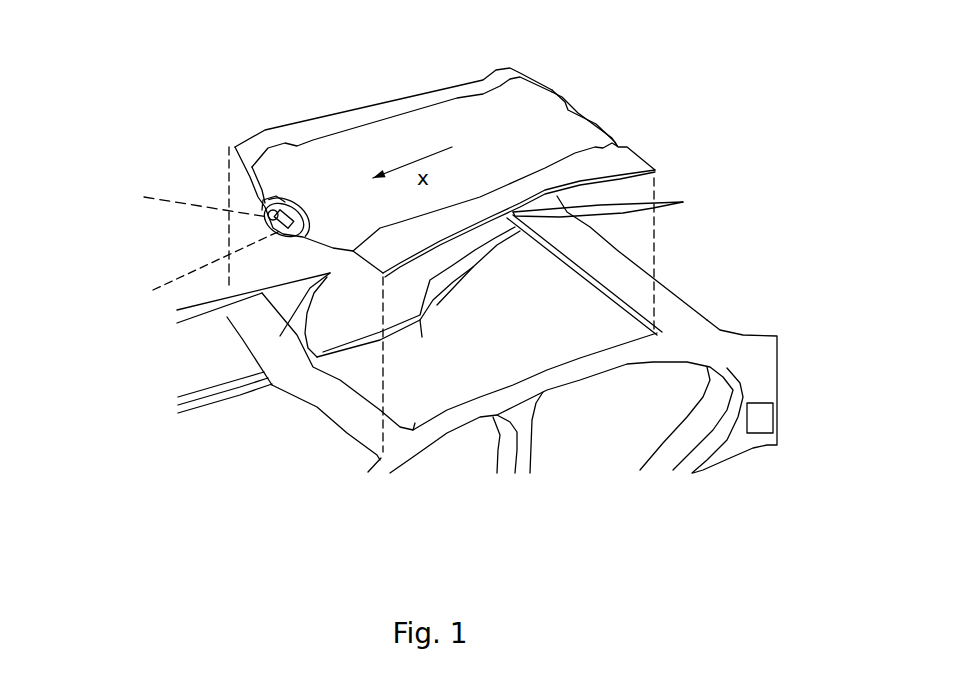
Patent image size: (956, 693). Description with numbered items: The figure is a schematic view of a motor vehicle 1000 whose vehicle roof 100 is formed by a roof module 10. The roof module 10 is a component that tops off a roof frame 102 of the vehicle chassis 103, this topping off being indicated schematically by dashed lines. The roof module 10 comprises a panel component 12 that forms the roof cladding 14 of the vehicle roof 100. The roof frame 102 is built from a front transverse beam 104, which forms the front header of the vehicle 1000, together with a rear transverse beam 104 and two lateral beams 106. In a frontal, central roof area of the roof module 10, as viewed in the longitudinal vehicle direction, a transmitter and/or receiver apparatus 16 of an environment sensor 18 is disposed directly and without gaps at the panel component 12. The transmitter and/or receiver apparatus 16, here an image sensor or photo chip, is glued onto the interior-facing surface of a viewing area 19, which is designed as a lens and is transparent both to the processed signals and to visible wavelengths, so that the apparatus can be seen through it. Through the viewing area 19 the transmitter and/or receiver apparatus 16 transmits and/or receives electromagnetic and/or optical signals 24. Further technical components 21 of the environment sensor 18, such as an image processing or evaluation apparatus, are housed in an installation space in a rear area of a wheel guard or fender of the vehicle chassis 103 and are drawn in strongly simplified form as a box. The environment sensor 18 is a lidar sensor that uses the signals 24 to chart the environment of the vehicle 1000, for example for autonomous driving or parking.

The roof module 10 is at (467, 130).
The panel component 12 is at (558, 125).
The roof cladding 14 is at (507, 135).
The transmitter and/or receiver apparatus 16 is at (285, 207).
The environment sensor 18 is at (275, 204).
The viewing area 19 is at (265, 210).
The further technical components 21 is at (760, 433).
The electromagnetic and/or optical signals 24 is at (158, 197).
The vehicle roof 100 is at (203, 297).
The roof frame 102 is at (620, 270).
The transverse beam 104 is at (362, 428).
The lateral beam 106 is at (287, 268).
The vehicle chassis 103 is at (713, 445).
The motor vehicle 1000 is at (186, 362).